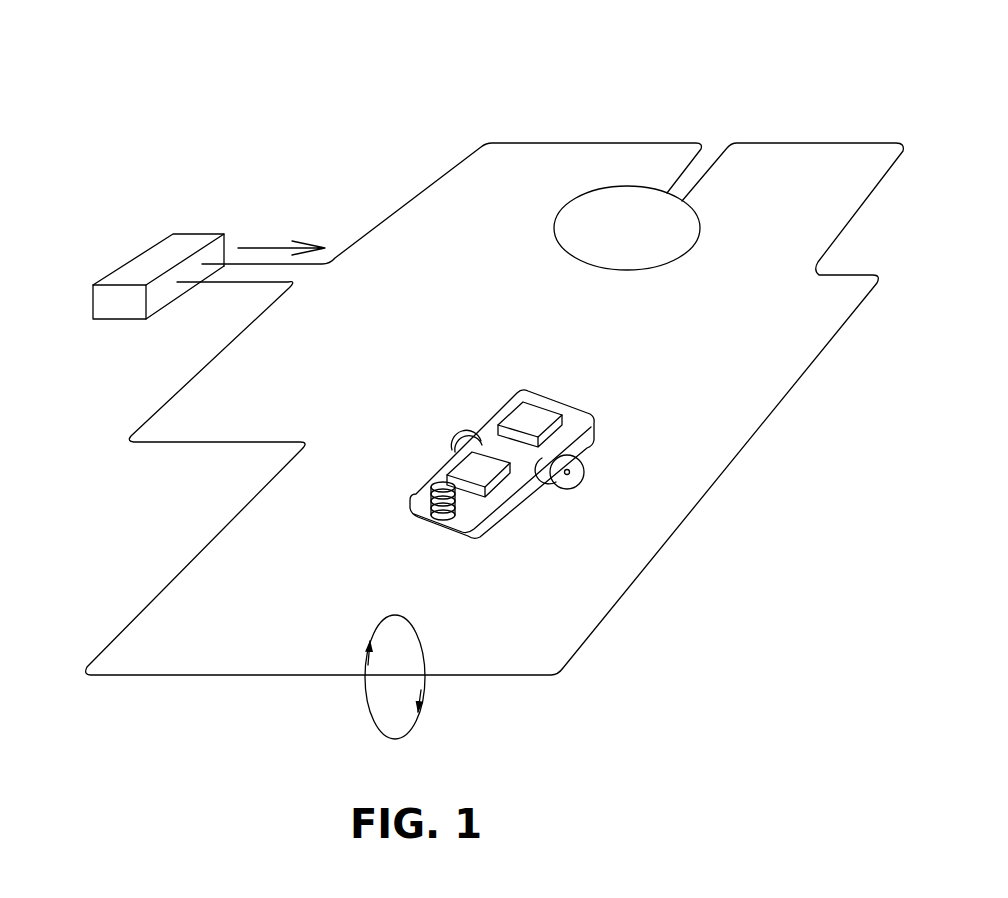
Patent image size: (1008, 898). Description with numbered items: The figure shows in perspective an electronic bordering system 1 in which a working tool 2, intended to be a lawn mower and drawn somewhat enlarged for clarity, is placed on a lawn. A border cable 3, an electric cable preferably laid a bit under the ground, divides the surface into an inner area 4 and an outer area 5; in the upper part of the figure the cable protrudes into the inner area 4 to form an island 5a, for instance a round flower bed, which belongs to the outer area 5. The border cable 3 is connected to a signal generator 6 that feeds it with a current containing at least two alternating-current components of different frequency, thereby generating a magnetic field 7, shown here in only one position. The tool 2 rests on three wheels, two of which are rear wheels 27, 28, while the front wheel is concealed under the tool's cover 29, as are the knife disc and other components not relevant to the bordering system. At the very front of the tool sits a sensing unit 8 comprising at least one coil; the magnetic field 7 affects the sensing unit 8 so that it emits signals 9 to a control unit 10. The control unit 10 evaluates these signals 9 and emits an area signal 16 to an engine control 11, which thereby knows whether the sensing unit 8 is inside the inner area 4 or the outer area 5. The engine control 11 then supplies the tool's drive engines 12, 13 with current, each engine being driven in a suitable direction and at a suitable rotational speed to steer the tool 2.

The electronic bordering system 1 is at (533, 130).
The working tool 2 is at (615, 401).
The border cable 3 is at (607, 617).
The inner area 4 is at (800, 212).
The outer area 5 is at (742, 89).
The island 5a is at (577, 219).
The signal generator 6 is at (162, 252).
The magnetic field 7 is at (410, 730).
The sensing unit 8 is at (430, 508).
The signals 9 is at (464, 492).
The control unit 10 is at (500, 418).
The engine control 11 is at (532, 410).
The drive engine 12 is at (558, 447).
The drive engine 13 is at (480, 457).
The area signal 16 is at (504, 445).
The rear wheel 27 is at (577, 470).
The rear wheel 28 is at (462, 434).
The cover 29 is at (587, 430).